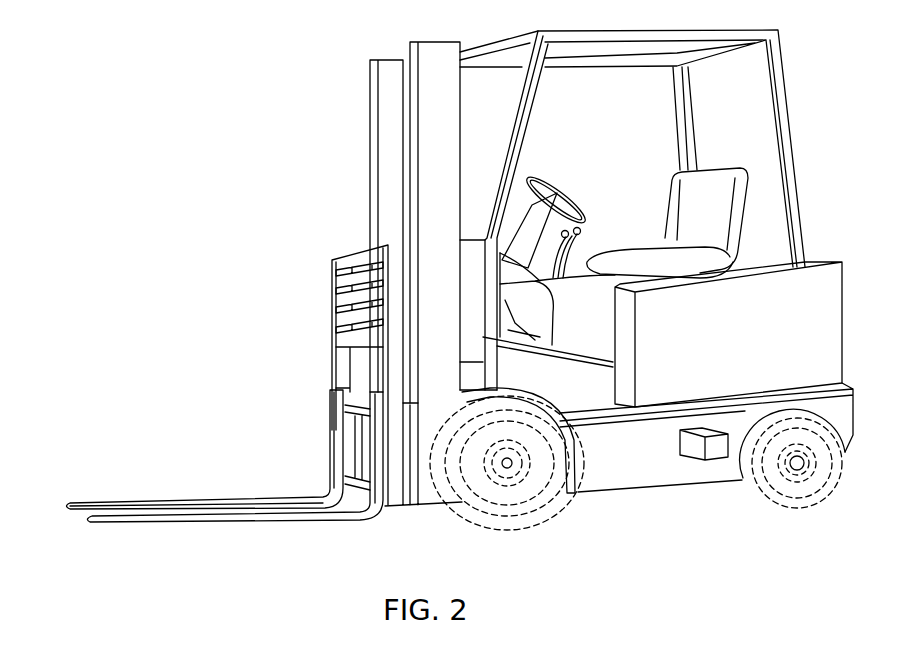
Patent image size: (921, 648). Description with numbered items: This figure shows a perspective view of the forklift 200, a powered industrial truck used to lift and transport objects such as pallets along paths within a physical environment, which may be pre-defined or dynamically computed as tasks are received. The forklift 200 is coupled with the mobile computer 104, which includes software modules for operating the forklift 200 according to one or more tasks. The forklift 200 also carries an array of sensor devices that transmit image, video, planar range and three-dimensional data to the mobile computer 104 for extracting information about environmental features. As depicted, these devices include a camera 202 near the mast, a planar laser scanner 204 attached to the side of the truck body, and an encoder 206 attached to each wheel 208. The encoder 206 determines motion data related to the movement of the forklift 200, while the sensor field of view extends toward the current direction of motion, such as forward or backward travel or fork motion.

The forklift 200 is at (231, 100).
The mobile computer 104 is at (357, 365).
The camera 202 is at (348, 402).
The wheel 208 is at (445, 483).
The encoder 206 is at (508, 468).
The planar laser scanner 204 is at (715, 452).